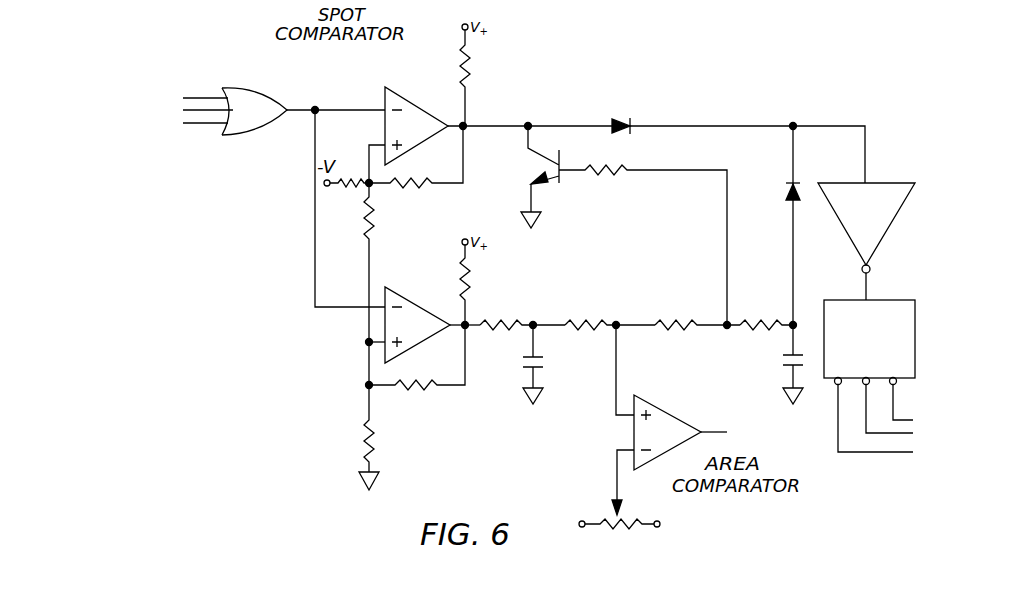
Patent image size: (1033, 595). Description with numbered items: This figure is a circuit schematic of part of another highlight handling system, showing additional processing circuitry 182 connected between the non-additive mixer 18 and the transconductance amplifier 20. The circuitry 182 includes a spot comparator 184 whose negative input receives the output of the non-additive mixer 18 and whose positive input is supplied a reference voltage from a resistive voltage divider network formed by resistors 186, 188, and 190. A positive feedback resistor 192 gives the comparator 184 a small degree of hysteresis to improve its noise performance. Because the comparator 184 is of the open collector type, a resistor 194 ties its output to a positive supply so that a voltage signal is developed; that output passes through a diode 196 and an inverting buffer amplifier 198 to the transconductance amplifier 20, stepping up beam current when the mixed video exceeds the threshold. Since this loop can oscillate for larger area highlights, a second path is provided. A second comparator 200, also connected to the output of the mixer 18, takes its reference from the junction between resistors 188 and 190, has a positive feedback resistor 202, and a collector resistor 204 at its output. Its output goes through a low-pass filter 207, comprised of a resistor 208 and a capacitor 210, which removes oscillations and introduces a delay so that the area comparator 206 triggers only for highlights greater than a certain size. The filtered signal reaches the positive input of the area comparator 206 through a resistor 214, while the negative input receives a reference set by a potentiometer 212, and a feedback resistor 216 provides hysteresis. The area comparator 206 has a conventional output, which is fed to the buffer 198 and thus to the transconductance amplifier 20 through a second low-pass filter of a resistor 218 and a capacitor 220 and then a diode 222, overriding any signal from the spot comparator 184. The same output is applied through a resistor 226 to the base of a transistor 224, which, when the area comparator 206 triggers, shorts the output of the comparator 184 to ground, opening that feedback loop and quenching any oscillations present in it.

The non-additive mixer 18 is at (245, 137).
The comparator 184 is at (396, 96).
The resistor 186 is at (346, 188).
The resistor 188 is at (376, 212).
The resistor 190 is at (364, 440).
The positive feedback resistor 192 is at (432, 190).
The resistor 194 is at (470, 60).
The diode 196 is at (617, 121).
The inverting buffer amplifier 198 is at (887, 183).
The transconductance amplifier 20 is at (834, 300).
The second comparator 200 is at (414, 310).
The positive feedback resistor 202 is at (420, 391).
The collector resistor 204 is at (470, 298).
The area comparator 206 is at (668, 414).
The low-pass filter 207 is at (515, 406).
The resistor 208 is at (502, 323).
The capacitor 210 is at (526, 357).
The potentiometer 212 is at (613, 531).
The resistor 214 is at (583, 323).
The feedback resistor 216 is at (658, 323).
The resistor 218 is at (789, 323).
The capacitor 220 is at (784, 361).
The diode 222 is at (789, 183).
The transistor 224 is at (546, 187).
The resistor 226 is at (628, 166).
The additional processing circuitry 182 is at (655, 96).